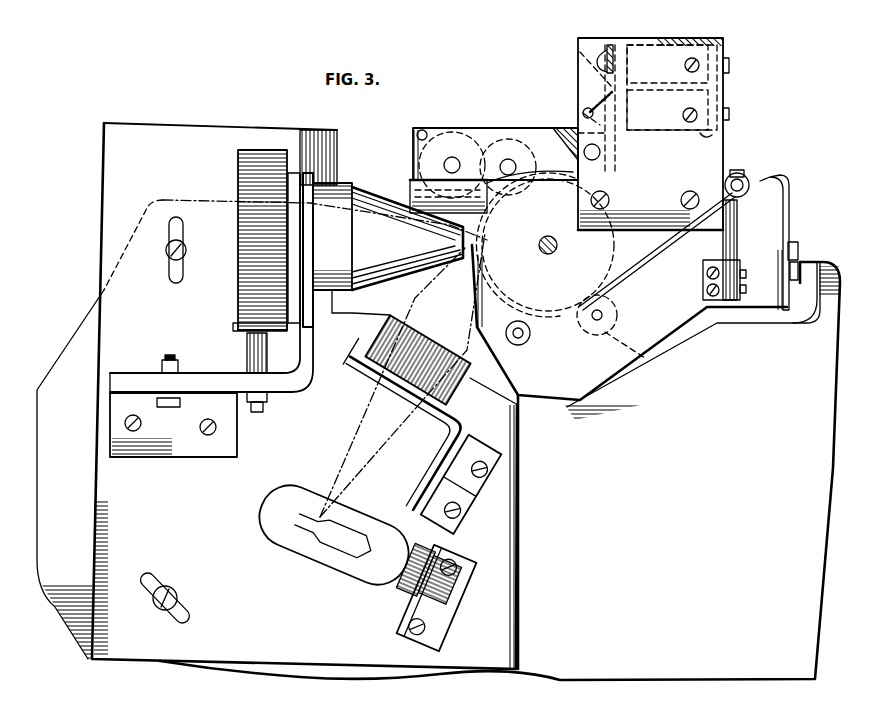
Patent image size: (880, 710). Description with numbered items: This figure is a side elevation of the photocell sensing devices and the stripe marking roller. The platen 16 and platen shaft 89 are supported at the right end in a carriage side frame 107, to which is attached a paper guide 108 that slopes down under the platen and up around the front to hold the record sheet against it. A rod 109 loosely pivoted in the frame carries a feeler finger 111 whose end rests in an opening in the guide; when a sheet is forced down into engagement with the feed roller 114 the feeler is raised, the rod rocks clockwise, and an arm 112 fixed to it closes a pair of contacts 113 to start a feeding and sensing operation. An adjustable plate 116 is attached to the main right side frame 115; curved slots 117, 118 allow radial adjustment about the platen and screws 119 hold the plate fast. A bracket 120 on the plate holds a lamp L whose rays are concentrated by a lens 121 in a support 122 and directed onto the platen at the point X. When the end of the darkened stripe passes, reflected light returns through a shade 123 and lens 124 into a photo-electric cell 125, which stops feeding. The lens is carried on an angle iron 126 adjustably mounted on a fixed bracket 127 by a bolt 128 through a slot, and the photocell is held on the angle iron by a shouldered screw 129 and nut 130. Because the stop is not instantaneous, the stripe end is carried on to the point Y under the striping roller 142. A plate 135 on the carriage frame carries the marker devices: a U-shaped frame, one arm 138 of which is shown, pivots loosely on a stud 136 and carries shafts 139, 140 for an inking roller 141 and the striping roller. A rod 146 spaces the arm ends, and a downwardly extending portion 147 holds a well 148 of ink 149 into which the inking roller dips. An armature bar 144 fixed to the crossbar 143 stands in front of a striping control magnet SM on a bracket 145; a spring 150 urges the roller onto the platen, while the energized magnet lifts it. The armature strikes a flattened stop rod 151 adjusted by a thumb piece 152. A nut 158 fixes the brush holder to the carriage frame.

The platen 16 is at (612, 268).
The platen shaft 89 is at (552, 256).
The carriage side frame 107 is at (688, 320).
The paper guide 108 is at (780, 192).
The rod 109 is at (745, 180).
The feeler finger 111 is at (682, 236).
The arm 112 is at (748, 228).
The pair of contacts 113 is at (745, 212).
The feed roller 114 is at (642, 347).
The main right side frame 115 is at (688, 657).
The adjustable plate 116 is at (506, 642).
The curved slot 117 is at (170, 272).
The curved slot 118 is at (150, 588).
The screws 119 is at (165, 243).
The bracket 120 is at (466, 598).
The lens 121 is at (515, 430).
The support 122 is at (470, 478).
The shade 123 is at (380, 258).
The lens 124 is at (322, 150).
The photo-electric cell 125 is at (256, 165).
The angle iron 126 is at (313, 374).
The fixed bracket 127 is at (226, 445).
The bolt 128 is at (168, 360).
The shouldered screw 129 is at (264, 410).
The nut 130 is at (268, 398).
The plate 135 is at (716, 157).
The stud 136 is at (584, 150).
The arm 138 is at (527, 128).
The shaft 139 is at (452, 157).
The shaft 140 is at (507, 159).
The inking roller 141 is at (477, 132).
The striping roller 142 is at (510, 139).
The crossbar 143 is at (618, 180).
The armature bar 144 is at (583, 113).
The bracket 145 is at (705, 135).
The rod 146 is at (421, 130).
The downwardly extending portion 147 is at (412, 175).
The well 148 is at (412, 196).
The ink 149 is at (410, 183).
The spring 150 is at (598, 88).
The rod 151 is at (600, 60).
The thumb piece 152 is at (609, 45).
The nut 158 is at (527, 346).
The lamp L is at (282, 556).
The striping control magnet SM is at (652, 45).
The focusing point X is at (493, 240).
The stopping point Y is at (517, 187).